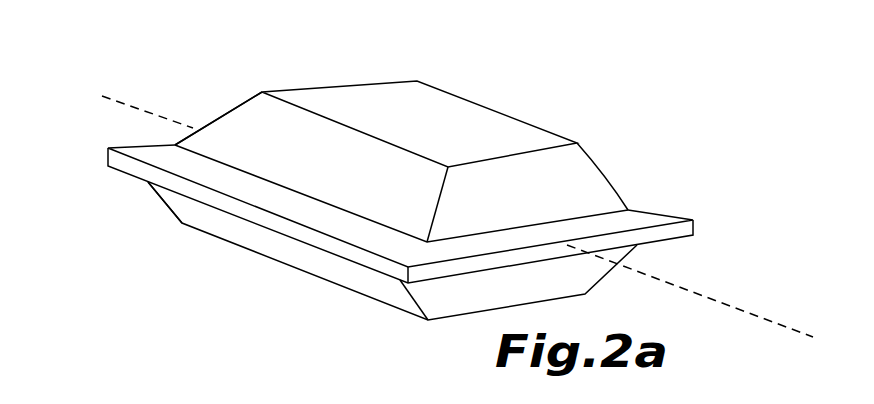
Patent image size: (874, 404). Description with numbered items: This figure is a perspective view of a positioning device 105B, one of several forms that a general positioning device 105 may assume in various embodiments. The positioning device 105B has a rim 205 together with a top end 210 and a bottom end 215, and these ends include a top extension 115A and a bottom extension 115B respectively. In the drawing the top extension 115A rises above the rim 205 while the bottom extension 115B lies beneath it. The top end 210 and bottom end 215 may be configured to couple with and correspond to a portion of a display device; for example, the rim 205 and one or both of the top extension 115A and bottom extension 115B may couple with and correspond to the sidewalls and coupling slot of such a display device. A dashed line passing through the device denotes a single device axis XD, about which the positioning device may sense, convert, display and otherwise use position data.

The positioning device 105 is at (372, 173).
The positioning device 105B is at (361, 173).
The top extension 115A is at (303, 90).
The bottom extension 115B is at (237, 245).
The rim 205 is at (108, 149).
The top end 210 is at (214, 118).
The bottom end 215 is at (178, 219).
The device axis XD is at (767, 318).